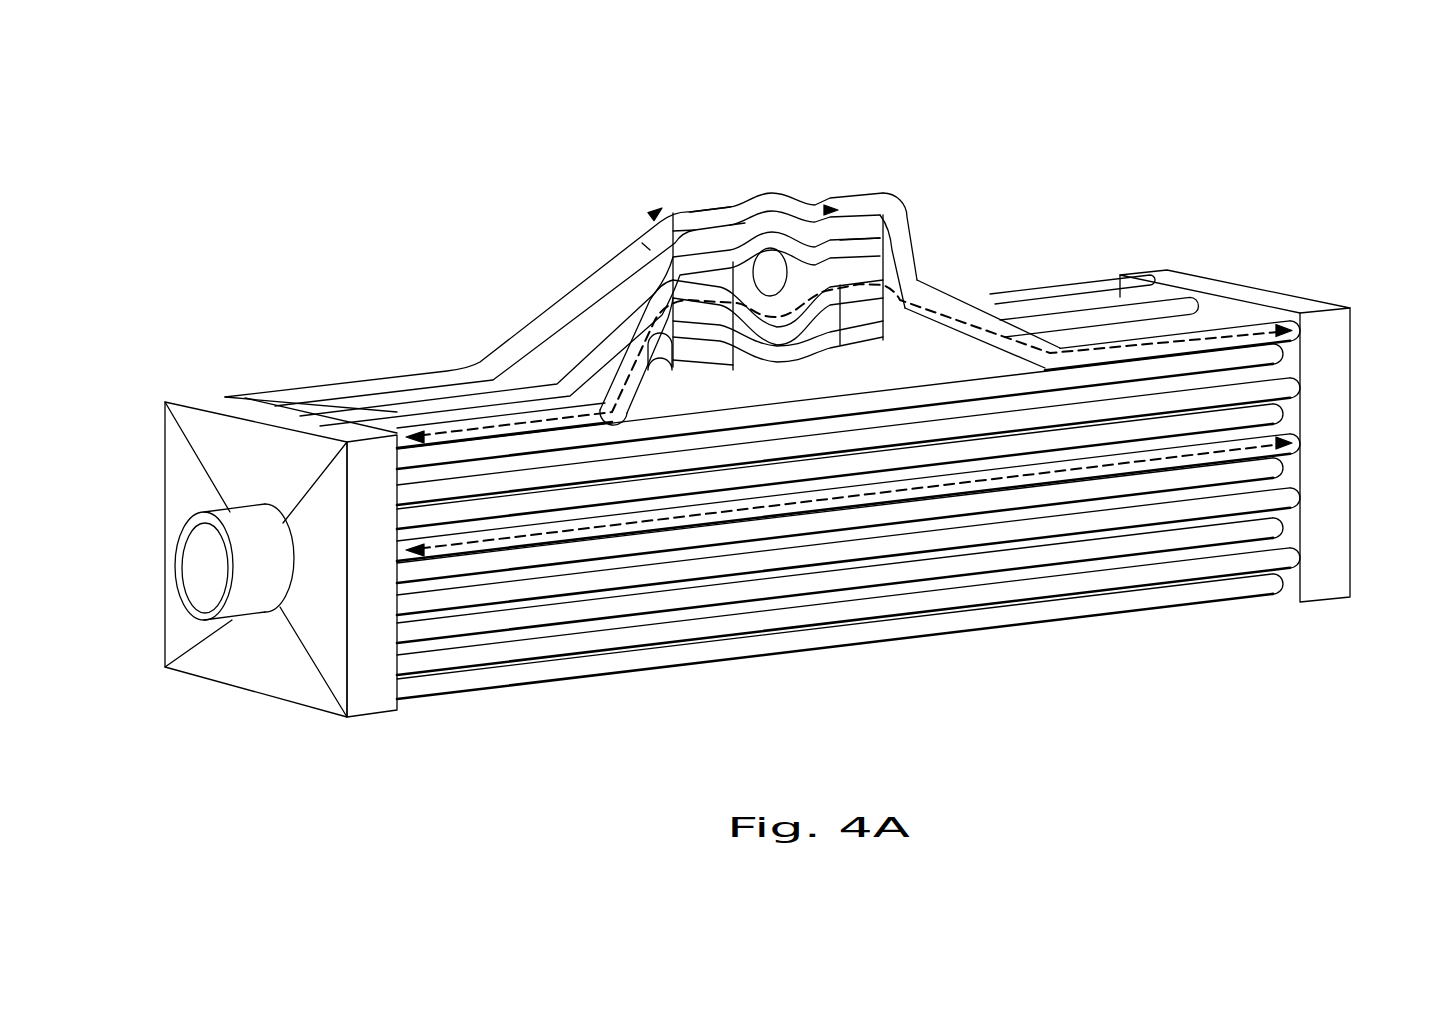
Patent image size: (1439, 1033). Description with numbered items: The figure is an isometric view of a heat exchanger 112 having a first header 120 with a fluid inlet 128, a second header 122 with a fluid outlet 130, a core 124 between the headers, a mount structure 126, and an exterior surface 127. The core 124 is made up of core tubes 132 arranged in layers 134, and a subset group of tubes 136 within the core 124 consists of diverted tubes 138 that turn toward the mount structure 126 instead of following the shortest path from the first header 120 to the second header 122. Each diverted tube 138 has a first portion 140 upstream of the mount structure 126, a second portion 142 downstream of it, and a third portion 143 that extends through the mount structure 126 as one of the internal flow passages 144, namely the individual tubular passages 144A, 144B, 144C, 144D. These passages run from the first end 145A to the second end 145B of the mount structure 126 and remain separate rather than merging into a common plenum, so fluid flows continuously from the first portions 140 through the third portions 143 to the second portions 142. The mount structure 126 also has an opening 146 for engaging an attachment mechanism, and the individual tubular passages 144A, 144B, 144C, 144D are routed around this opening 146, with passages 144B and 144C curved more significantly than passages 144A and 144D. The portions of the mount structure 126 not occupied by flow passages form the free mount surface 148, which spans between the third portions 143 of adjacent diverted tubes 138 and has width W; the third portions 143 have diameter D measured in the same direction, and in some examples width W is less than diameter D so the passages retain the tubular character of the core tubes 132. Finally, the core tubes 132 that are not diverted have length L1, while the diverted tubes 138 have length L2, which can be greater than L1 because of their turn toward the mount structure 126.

The heat exchanger 112 is at (757, 222).
The first header 120 is at (192, 368).
The second header 122 is at (1222, 252).
The core 124 is at (954, 658).
The mount structure 126 is at (830, 197).
The exterior surface 127 is at (778, 240).
The fluid inlet 128 is at (178, 545).
The fluid outlet 130 is at (1318, 410).
The core tubes 132 is at (1110, 407).
The layers 134 is at (1292, 512).
The subset group of tubes 136 is at (546, 182).
The diverted tubes 138 is at (505, 350).
The first portions 140 is at (540, 320).
The second portions 142 is at (1013, 333).
The third portions 143 is at (688, 212).
The internal flow passages 144 is at (770, 245).
The individual tubular passage 144A is at (718, 230).
The individual tubular passage 144B is at (782, 355).
The individual tubular passage 144C is at (822, 355).
The individual tubular passage 144D is at (710, 360).
The first end 145A is at (636, 326).
The second end 145B is at (900, 297).
The opening 146 is at (753, 205).
The free mount surface 148 is at (862, 222).
The third portion diameter D is at (650, 215).
The free mount surface width W is at (642, 243).
The core tube length L1 is at (543, 537).
The diverted tube length L2 is at (460, 425).